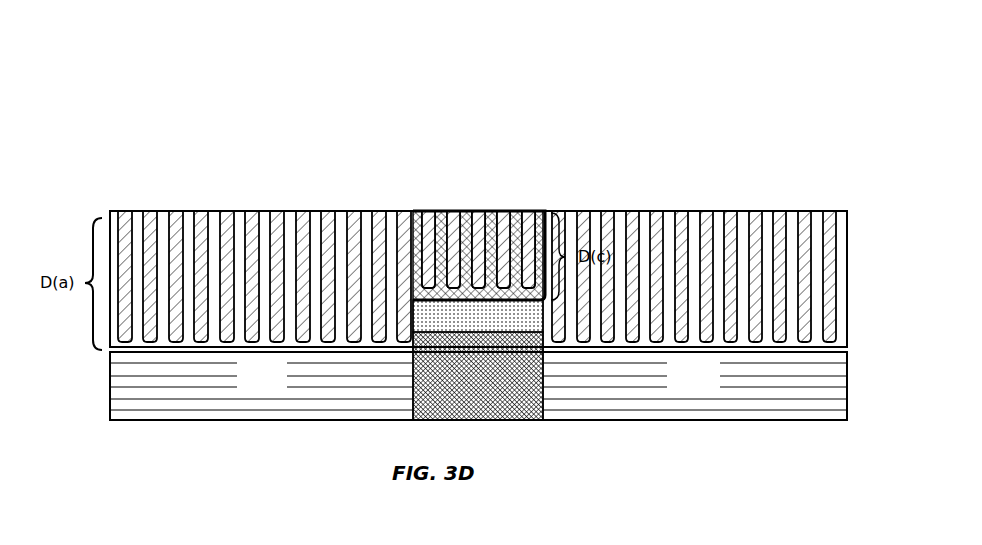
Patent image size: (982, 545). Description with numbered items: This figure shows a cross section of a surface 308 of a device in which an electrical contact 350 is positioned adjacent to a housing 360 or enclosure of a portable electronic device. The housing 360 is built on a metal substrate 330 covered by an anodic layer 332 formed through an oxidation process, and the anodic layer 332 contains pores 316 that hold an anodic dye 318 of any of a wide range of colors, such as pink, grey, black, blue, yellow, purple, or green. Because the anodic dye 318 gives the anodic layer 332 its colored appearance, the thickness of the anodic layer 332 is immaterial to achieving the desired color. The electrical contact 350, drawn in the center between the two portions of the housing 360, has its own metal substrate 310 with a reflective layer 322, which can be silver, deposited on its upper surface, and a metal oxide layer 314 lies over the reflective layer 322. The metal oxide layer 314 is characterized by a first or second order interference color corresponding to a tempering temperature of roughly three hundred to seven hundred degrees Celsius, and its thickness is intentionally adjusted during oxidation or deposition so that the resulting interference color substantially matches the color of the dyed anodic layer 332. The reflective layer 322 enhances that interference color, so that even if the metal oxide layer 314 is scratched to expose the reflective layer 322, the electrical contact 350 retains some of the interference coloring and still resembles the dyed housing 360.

The surface 308 is at (487, 83).
The housing 360 is at (766, 144).
The pores 316 is at (180, 207).
The anodic layer 332 is at (211, 210).
The anodic dye 318 is at (323, 210).
The electrical contact 350 is at (485, 196).
The metal oxide layer 314 is at (511, 210).
The metal substrate 330 is at (276, 383).
The reflective layer 322 is at (490, 325).
The metal substrate 310 is at (491, 403).